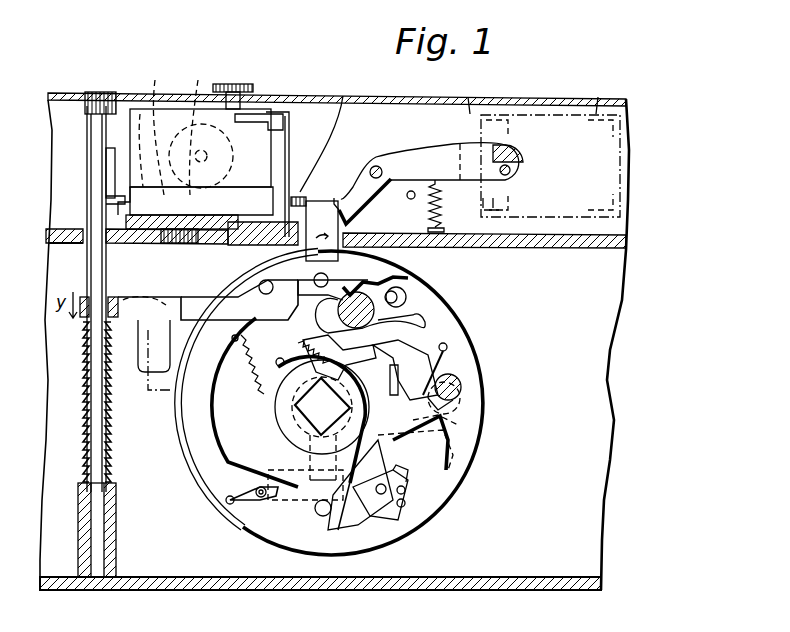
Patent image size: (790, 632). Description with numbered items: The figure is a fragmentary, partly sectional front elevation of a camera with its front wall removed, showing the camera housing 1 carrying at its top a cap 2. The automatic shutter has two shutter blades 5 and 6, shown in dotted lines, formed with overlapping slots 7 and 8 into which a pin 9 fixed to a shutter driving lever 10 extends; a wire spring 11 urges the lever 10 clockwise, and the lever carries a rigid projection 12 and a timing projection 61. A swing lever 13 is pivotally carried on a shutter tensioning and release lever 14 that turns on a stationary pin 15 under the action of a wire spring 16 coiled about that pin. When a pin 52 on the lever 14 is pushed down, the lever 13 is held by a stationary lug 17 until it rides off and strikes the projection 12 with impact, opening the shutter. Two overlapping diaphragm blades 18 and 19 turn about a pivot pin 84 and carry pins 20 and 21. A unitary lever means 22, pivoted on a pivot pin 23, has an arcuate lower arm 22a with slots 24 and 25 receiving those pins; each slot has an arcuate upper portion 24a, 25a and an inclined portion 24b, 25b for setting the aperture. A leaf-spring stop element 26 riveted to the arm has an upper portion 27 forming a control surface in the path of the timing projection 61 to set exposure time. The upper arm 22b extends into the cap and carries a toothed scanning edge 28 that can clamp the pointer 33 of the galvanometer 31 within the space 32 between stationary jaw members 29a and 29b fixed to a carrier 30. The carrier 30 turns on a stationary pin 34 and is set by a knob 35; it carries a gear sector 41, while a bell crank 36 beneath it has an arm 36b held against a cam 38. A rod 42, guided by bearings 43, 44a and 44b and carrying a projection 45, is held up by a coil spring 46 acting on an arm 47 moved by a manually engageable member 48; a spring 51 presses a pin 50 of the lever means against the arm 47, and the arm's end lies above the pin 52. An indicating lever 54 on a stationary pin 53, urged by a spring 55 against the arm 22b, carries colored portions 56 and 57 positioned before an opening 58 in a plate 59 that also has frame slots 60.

The camera housing 1 is at (592, 244).
The cap 2 is at (414, 94).
The shutter blade 5 is at (346, 458).
The shutter blade 6 is at (288, 402).
The slot 7 is at (455, 442).
The slot 8 is at (462, 402).
The pin 9 is at (468, 420).
The shutter driving lever 10 is at (458, 385).
The wire spring 11 is at (448, 353).
The rigid projection 12 is at (430, 358).
The swing lever 13 is at (405, 345).
The shutter tensioning and release lever 14 is at (412, 278).
The stationary pin 15 is at (345, 285).
The wire spring 16 is at (395, 318).
The lug 17 is at (452, 352).
The diaphragm blade 18 is at (284, 400).
The diaphragm blade 19 is at (298, 420).
The pin 20 is at (445, 517).
The pin 21 is at (266, 500).
The unitary lever means 22 is at (252, 290).
The lower arm 22a is at (358, 508).
The upper arm 22b is at (325, 210).
The pivot pin 23 is at (342, 294).
The slot 24 is at (388, 520).
The upper slot portion 24a is at (412, 492).
The inclined slot portion 24b is at (365, 515).
The slot 25 is at (258, 505).
The upper slot portion 25a is at (322, 518).
The inclined slot portion 25b is at (235, 508).
The stop element 26 is at (440, 450).
The upper portion 27 is at (455, 450).
The scanning edge 28 is at (332, 134).
The stationary jaw member 29a is at (311, 199).
The stationary jaw member 29b is at (280, 242).
The carrier 30 is at (185, 128).
The electrical instrument 31 is at (200, 135).
The space 32 is at (260, 114).
The pointer 33 is at (288, 114).
The stationary pin 34 is at (166, 242).
The knob 35 is at (234, 86).
The bell crank 36 is at (195, 234).
The bell crank arm 36b is at (142, 112).
The cam 38 is at (159, 135).
The gear sector 41 is at (124, 201).
The rod 42 is at (98, 125).
The bearing 43 is at (88, 246).
The bearing 44a is at (100, 94).
The bearing 44b is at (110, 504).
The projection 45 is at (110, 160).
The coil spring 46 is at (88, 375).
The arm 47 is at (215, 360).
The manually engageable member 48 is at (115, 316).
The pin 50 is at (221, 348).
The spring 51 is at (278, 366).
The pin 52 is at (400, 292).
The stationary pin 53 is at (372, 171).
The lever 54 is at (400, 157).
The spring 55 is at (440, 208).
The colored portion 56 is at (512, 171).
The colored portion 57 is at (508, 154).
The opening 58 is at (508, 184).
The plate 59 is at (530, 110).
The slots 60 is at (472, 114).
The timing projection 61 is at (464, 385).
The pivot pin 84 is at (328, 518).